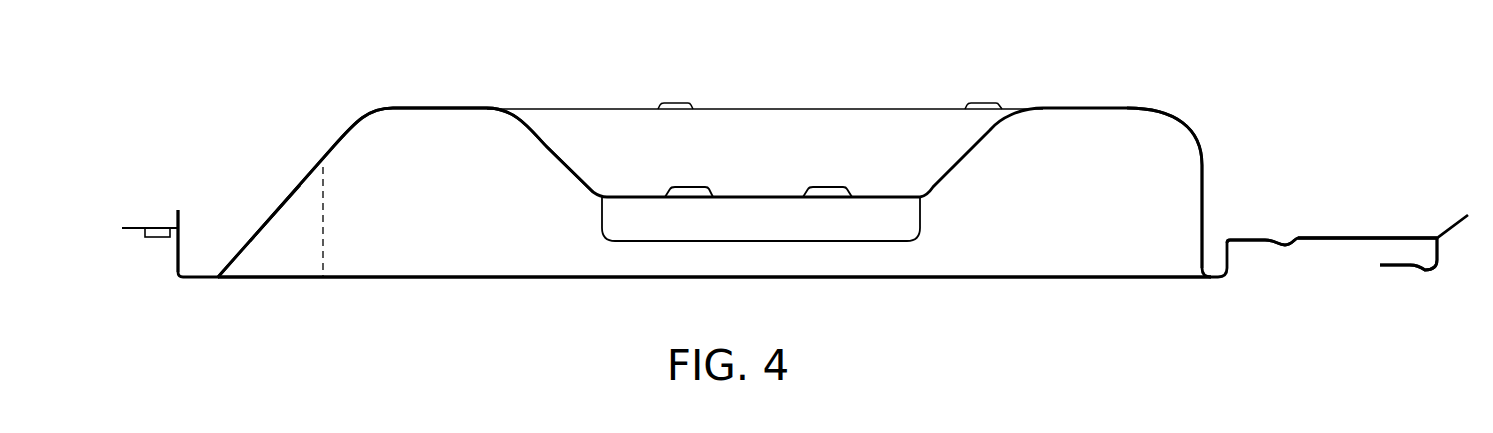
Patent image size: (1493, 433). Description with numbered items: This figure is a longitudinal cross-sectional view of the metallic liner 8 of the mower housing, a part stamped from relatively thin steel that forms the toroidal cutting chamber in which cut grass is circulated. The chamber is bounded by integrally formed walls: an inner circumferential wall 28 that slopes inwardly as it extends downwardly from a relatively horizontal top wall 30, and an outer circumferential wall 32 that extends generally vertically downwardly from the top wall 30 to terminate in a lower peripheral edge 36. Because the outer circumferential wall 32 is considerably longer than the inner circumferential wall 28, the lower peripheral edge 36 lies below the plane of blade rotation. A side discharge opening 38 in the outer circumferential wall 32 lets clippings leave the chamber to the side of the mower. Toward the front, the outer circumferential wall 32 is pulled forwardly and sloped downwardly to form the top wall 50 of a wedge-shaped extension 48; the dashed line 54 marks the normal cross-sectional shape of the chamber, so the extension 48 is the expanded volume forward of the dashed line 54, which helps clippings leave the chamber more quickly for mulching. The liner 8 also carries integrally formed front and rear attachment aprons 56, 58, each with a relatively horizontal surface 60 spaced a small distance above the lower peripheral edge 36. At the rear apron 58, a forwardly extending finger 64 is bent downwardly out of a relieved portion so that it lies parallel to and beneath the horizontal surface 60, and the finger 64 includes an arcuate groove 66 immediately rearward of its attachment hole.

The metallic liner 8 is at (789, 96).
The inner circumferential wall 28 is at (547, 147).
The top wall 30 is at (433, 108).
The outer circumferential wall 32 is at (1198, 157).
The lower peripheral edge 36 is at (933, 279).
The side discharge opening 38 is at (815, 222).
The wedge-shaped extension 48 is at (270, 176).
The top wall of extension 50 is at (302, 180).
The dashed line 54 is at (323, 202).
The front attachment apron 56 is at (165, 205).
The rear attachment apron 58 is at (1342, 215).
The horizontal surface 60 is at (135, 228).
The finger 64 is at (1403, 266).
The arcuate groove 66 is at (1428, 272).